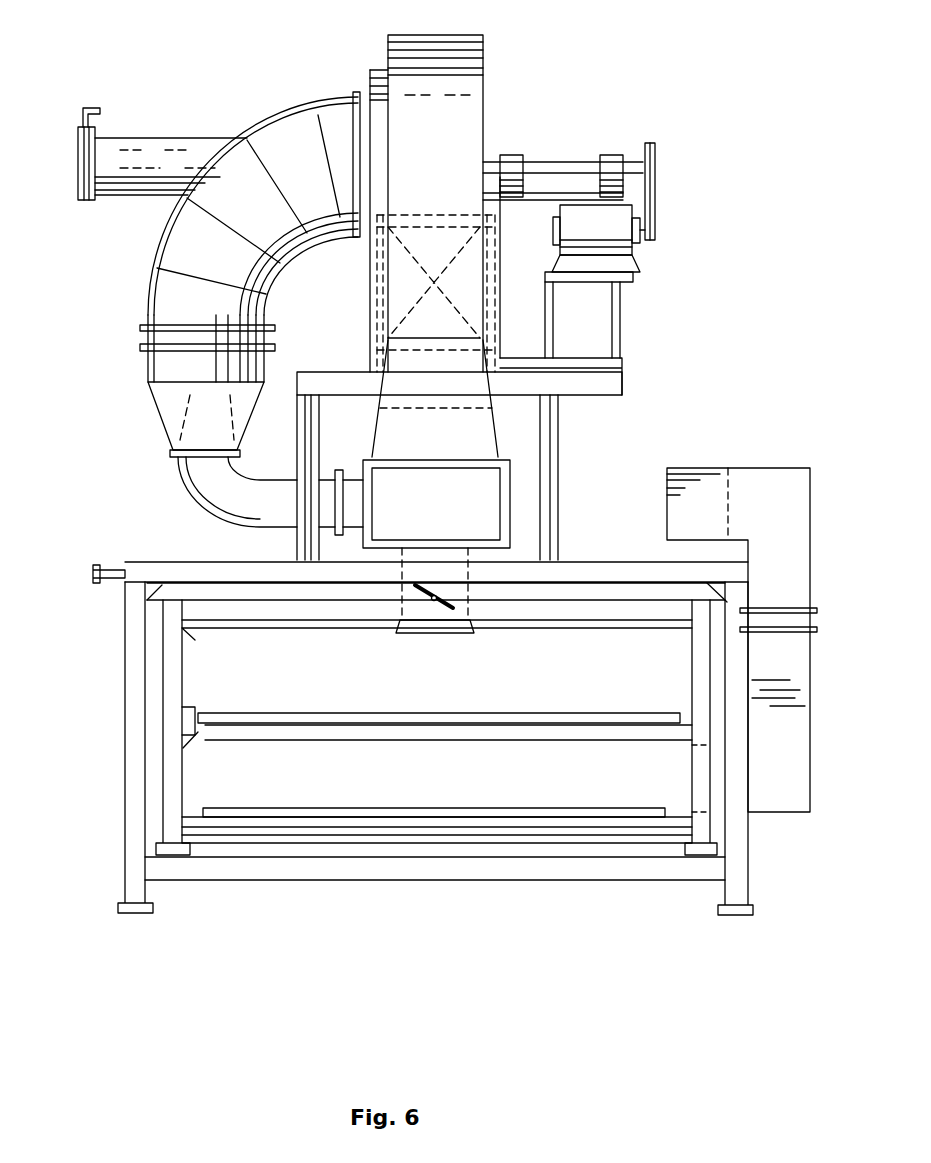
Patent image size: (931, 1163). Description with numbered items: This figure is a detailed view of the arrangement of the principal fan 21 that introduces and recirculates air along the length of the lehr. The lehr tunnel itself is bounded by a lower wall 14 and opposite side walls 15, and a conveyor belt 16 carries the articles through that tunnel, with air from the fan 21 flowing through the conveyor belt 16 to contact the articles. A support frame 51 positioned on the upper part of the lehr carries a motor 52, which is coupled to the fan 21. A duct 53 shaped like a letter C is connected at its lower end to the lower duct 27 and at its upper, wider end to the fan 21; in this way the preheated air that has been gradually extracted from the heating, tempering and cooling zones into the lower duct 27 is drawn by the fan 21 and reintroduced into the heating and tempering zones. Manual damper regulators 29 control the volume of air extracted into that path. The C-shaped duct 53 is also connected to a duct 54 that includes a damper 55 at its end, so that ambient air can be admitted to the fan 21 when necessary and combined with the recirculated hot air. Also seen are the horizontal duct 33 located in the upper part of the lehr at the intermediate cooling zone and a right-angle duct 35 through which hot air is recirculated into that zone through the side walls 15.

The lower wall 14 is at (400, 880).
The side walls 15 is at (718, 788).
The conveyor belt 16 is at (310, 715).
The principal fan 21 is at (483, 48).
The lower duct 27 is at (495, 520).
The manual damper regulators 29 is at (446, 612).
The horizontal duct 33 is at (712, 480).
The duct 35 is at (790, 700).
The support frame 51 is at (605, 380).
The motor 52 is at (632, 252).
The C-shaped duct 53 is at (165, 300).
The duct 54 is at (165, 150).
The damper 55 is at (78, 155).